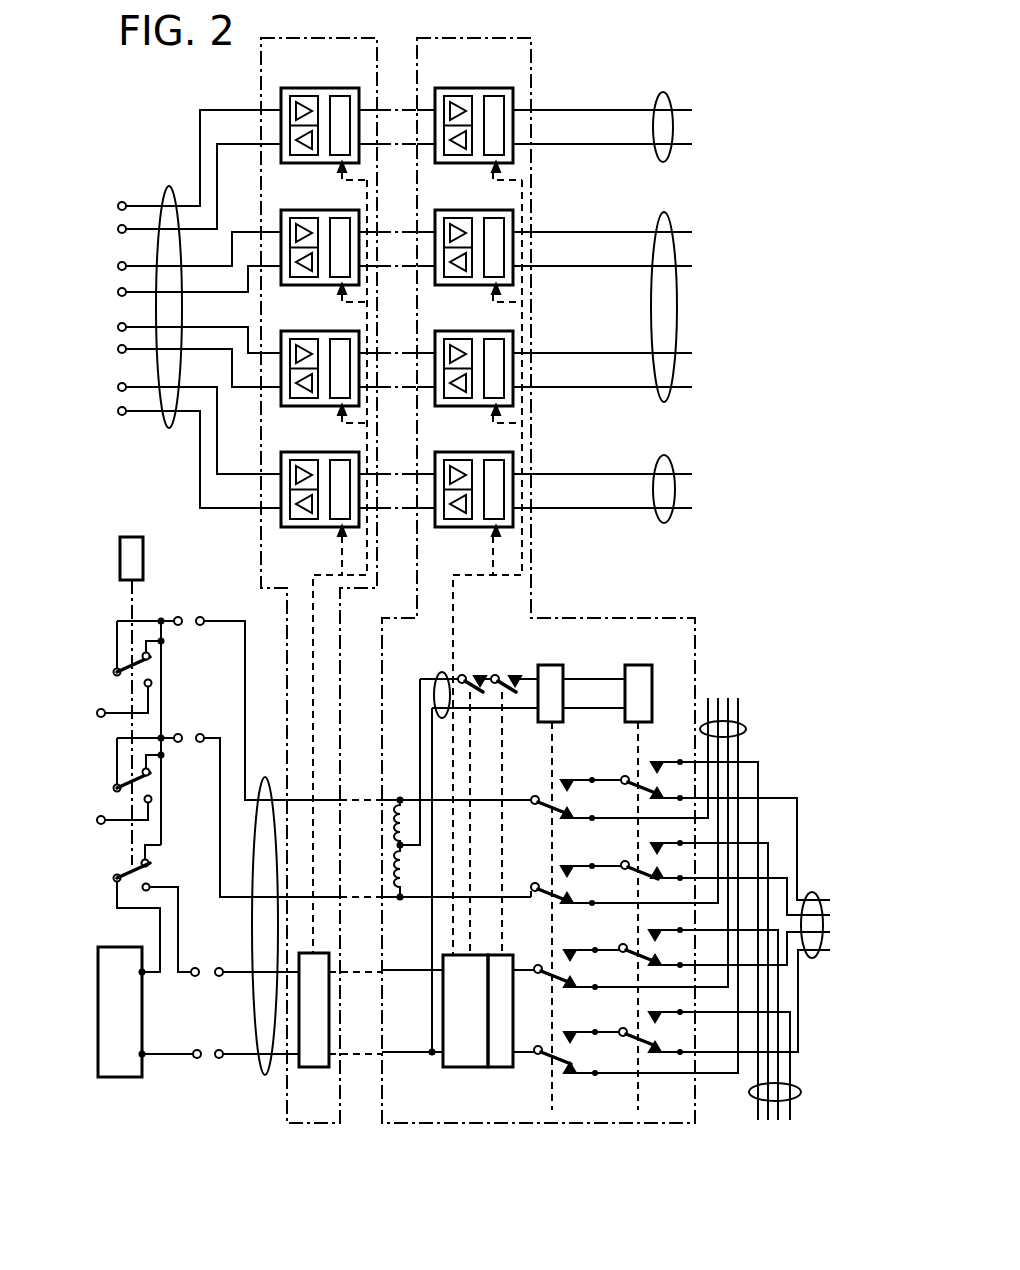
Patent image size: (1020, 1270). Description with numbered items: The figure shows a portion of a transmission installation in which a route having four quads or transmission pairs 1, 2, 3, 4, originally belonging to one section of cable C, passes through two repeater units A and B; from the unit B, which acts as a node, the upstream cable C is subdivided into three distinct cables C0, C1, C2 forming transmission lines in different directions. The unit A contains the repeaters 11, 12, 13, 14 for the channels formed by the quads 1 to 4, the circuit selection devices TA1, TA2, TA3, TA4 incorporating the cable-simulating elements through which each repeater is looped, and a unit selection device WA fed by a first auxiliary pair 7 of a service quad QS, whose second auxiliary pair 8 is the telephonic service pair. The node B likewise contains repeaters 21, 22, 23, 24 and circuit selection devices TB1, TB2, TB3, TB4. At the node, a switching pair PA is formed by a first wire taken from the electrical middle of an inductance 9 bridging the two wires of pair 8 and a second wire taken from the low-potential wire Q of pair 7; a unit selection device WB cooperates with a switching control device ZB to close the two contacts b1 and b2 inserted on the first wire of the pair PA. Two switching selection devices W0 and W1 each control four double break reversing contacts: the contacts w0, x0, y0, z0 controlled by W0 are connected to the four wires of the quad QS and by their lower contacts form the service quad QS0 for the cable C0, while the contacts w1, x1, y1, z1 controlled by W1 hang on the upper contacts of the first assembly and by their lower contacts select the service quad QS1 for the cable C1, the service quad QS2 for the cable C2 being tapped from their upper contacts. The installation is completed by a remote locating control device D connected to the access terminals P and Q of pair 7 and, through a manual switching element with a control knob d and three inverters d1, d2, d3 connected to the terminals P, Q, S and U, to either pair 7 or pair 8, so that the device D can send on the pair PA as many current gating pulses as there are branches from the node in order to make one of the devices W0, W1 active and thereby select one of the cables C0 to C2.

The quad 1 is at (192, 171).
The quad 2 is at (192, 264).
The quad 3 is at (192, 355).
The quad 4 is at (192, 445).
The unit remote locating pair 7 is at (219, 1049).
The telephonic service pair 8 is at (202, 617).
The inductance 9 is at (393, 864).
The repeater 11 is at (303, 150).
The repeater 12 is at (303, 272).
The repeater 13 is at (303, 393).
The repeater 14 is at (303, 514).
The repeater 21 is at (457, 150).
The repeater 22 is at (457, 272).
The repeater 23 is at (457, 393).
The repeater 24 is at (457, 514).
The repeater unit A is at (372, 65).
The repeater unit (node) B is at (527, 66).
The cable section C is at (167, 196).
The cable C0 is at (672, 126).
The cable C1 is at (674, 303).
The cable C2 is at (674, 488).
The control knob d is at (143, 554).
The inverter d1 is at (151, 784).
The inverter d2 is at (153, 860).
The inverter d3 is at (151, 667).
The access terminal S is at (100, 700).
The access terminal U is at (98, 805).
The remote locating control device D is at (121, 968).
The service quad QS is at (266, 779).
The service quad QS0 is at (736, 724).
The service quad QS1 is at (810, 892).
The service quad QS2 is at (780, 1100).
The switching pair PA is at (441, 672).
The contact b1 is at (467, 675).
The contact b2 is at (500, 675).
The switching selection device W0 is at (555, 670).
The switching selection device W1 is at (638, 670).
The unit selection device WA is at (319, 1066).
The unit selection device WB is at (462, 1047).
The switching control device ZB is at (497, 1047).
The reversing contact w0 is at (533, 797).
The reversing contact w1 is at (622, 776).
The reversing contact x0 is at (535, 883).
The reversing contact x1 is at (622, 861).
The reversing contact y0 is at (537, 965).
The reversing contact y1 is at (620, 944).
The reversing contact z0 is at (537, 1046).
The reversing contact z1 is at (620, 1028).
The circuit selection device TA1 is at (310, 120).
The circuit selection device TA2 is at (310, 242).
The circuit selection device TA3 is at (310, 363).
The circuit selection device TA4 is at (310, 484).
The circuit selection device TB1 is at (466, 120).
The circuit selection device TB2 is at (466, 242).
The circuit selection device TB3 is at (466, 363).
The circuit selection device TB4 is at (466, 484).